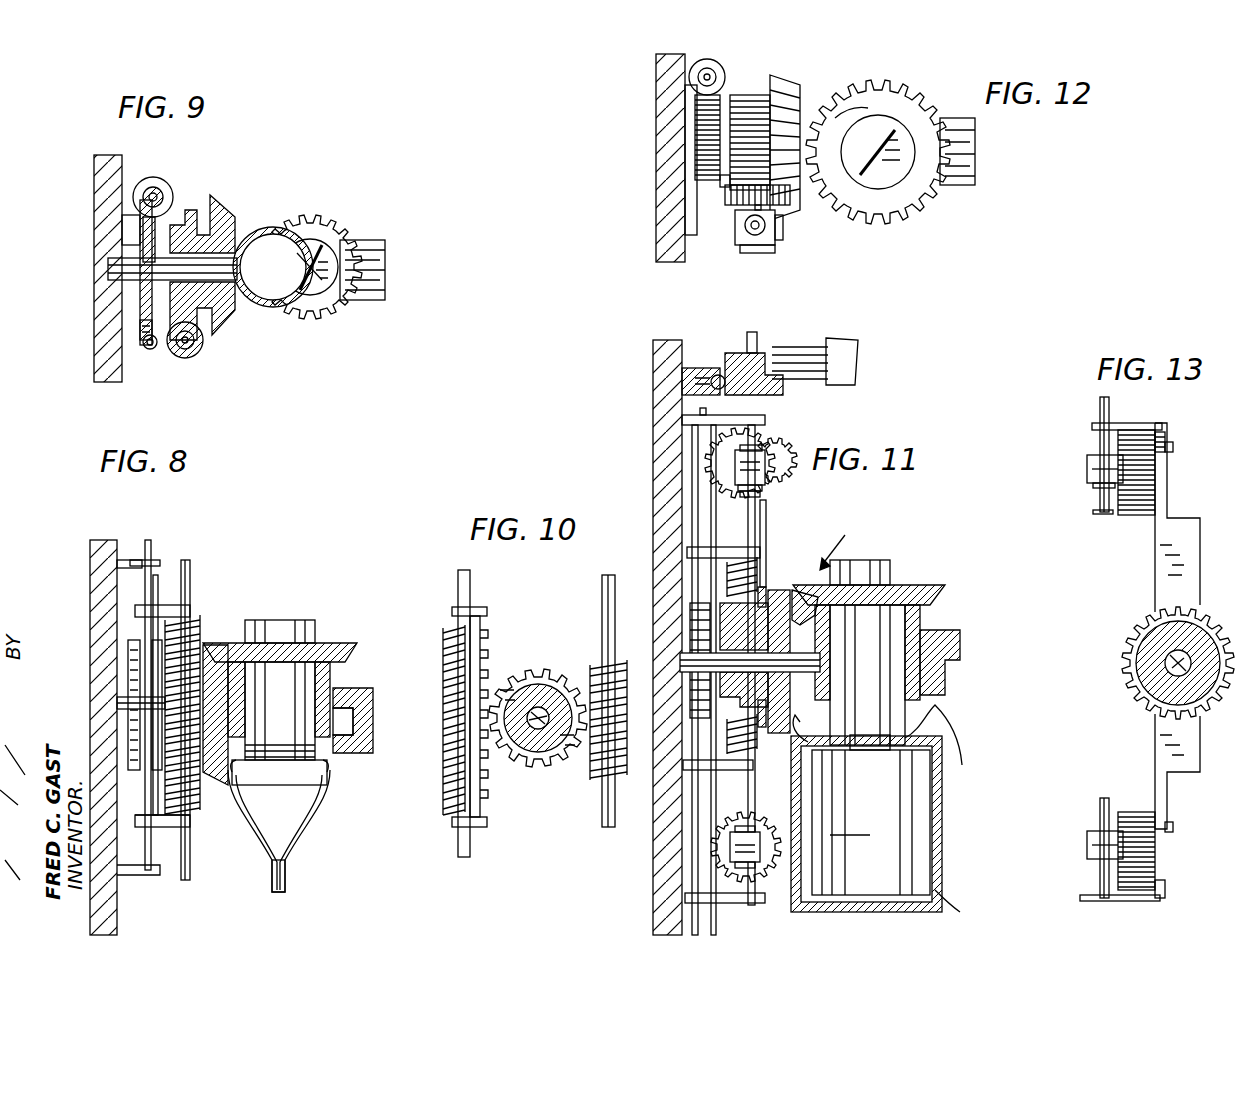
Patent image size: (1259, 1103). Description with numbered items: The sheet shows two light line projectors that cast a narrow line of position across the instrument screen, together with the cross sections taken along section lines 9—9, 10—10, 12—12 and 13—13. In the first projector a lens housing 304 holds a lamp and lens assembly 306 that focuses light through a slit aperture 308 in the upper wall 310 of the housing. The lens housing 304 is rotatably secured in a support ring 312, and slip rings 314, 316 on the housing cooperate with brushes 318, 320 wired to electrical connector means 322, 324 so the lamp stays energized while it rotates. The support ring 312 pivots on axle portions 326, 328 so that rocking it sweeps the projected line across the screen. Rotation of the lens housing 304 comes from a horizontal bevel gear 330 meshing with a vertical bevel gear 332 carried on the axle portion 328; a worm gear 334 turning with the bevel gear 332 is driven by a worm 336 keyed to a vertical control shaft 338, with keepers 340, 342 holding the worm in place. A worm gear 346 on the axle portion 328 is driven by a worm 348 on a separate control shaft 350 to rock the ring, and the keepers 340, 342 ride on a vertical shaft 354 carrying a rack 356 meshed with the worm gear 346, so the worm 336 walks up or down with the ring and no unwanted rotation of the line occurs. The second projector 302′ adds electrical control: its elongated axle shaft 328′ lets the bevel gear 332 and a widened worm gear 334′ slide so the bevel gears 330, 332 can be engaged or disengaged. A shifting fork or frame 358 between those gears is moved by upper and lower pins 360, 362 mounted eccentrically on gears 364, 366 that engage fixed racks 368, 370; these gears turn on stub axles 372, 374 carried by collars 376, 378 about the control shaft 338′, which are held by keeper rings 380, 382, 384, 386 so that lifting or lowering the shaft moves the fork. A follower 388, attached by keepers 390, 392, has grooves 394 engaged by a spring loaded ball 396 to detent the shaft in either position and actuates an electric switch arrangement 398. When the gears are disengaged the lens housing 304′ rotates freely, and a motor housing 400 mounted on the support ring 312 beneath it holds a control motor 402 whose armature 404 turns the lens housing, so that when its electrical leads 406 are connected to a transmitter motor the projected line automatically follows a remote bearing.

In FIG. 8, the section line 9— 9 is at (80, 668).
In FIG. 8, the section line 10— 10 is at (170, 500).
In FIG. 11, the section line 12— 12 is at (648, 406).
In FIG. 11, the section line 13— 13 is at (773, 400).
In FIG. 11, the line of position indicating projector 302′ is at (856, 539).
In FIG. 8, the lens housing 304 is at (293, 720).
In FIG. 11, the lens housing 304′ is at (880, 625).
In FIG. 9, the lamp and lens assembly 306 is at (268, 300).
In FIG. 9, the slit aperture 308 is at (290, 250).
In FIG. 12, the slit aperture 308 is at (895, 130).
In FIG. 9, the upper wall 310 is at (300, 230).
In FIG. 12, the upper wall 310 is at (890, 185).
In FIG. 8, the support ring 312 is at (332, 668).
In FIG. 8, the slip ring 314 is at (330, 785).
In FIG. 8, the slip ring 316 is at (373, 720).
In FIG. 8, the brush 318 is at (318, 758).
In FIG. 8, the brush 320 is at (248, 772).
In FIG. 8, the electrical connector means 322 is at (308, 810).
In FIG. 11, the electrical connector means 322 is at (940, 722).
In FIG. 8, the electrical connector means 324 is at (272, 870).
In FIG. 11, the electrical connector means 324 is at (810, 755).
In FIG. 8, the axle portion 326 is at (373, 700).
In FIG. 9, the axle portion 328 is at (118, 268).
In FIG. 8, the axle portion 328 is at (120, 705).
In FIG. 10, the axle portion 328 is at (537, 707).
In FIG. 11, the axle shaft 328′ is at (812, 660).
In FIG. 12, the axle shaft 328′ is at (810, 212).
In FIG. 9, the horizontal bevel gear 330 is at (318, 330).
In FIG. 8, the horizontal bevel gear 330 is at (350, 645).
In FIG. 11, the horizontal bevel gear 330 is at (915, 585).
In FIG. 12, the horizontal bevel gear 330 is at (928, 208).
In FIG. 9, the vertical bevel gear 332 is at (230, 212).
In FIG. 8, the vertical bevel gear 332 is at (215, 778).
In FIG. 11, the vertical bevel gear 332 is at (798, 596).
In FIG. 12, the vertical bevel gear 332 is at (840, 112).
In FIG. 9, the worm gear 334 is at (205, 205).
In FIG. 10, the worm gear 334 is at (555, 680).
In FIG. 11, the worm gear 334′ is at (710, 600).
In FIG. 12, the worm gear 334′ is at (753, 128).
In FIG. 13, the worm gear 334′ is at (1215, 700).
In FIG. 9, the worm 336 is at (184, 358).
In FIG. 8, the worm 336 is at (196, 620).
In FIG. 10, the worm 336 is at (445, 635).
In FIG. 11, the worm 336 is at (740, 562).
In FIG. 9, the control shaft 338 is at (198, 350).
In FIG. 8, the control shaft 338 is at (192, 578).
In FIG. 11, the control shaft 338′ is at (757, 500).
In FIG. 12, the control shaft 338′ is at (770, 245).
In FIG. 13, the control shaft 338′ is at (1100, 410).
In FIG. 8, the keeper 340 is at (155, 600).
In FIG. 8, the keeper 342 is at (175, 827).
In FIG. 9, the worm gear 346 is at (140, 232).
In FIG. 8, the worm gear 346 is at (152, 740).
In FIG. 10, the worm gear 346 is at (545, 753).
In FIG. 12, the worm gear 346 is at (690, 125).
In FIG. 9, the worm 348 is at (160, 190).
In FIG. 8, the worm 348 is at (128, 685).
In FIG. 10, the worm 348 is at (600, 800).
In FIG. 12, the worm 348 is at (695, 77).
In FIG. 9, the control shaft 350 is at (158, 180).
In FIG. 8, the control shaft 350 is at (148, 545).
In FIG. 10, the control shaft 350 is at (602, 600).
In FIG. 12, the control shaft 350 is at (725, 68).
In FIG. 9, the vertical shaft 354 is at (150, 350).
In FIG. 8, the vertical shaft 354 is at (130, 565).
In FIG. 9, the rack 356 is at (140, 330).
In FIG. 10, the rack 356 is at (490, 640).
In FIG. 11, the shifting fork or frame 358 is at (768, 540).
In FIG. 12, the shifting fork or frame 358 is at (785, 78).
In FIG. 13, the shifting fork or frame 358 is at (1185, 545).
In FIG. 11, the upper pin 360 is at (796, 438).
In FIG. 12, the upper pin 360 is at (745, 245).
In FIG. 13, the upper pin 360 is at (1173, 448).
In FIG. 11, the lower pin 362 is at (745, 820).
In FIG. 13, the lower pin 362 is at (1172, 832).
In FIG. 11, the gear wheel 364 is at (766, 470).
In FIG. 13, the gear wheel 364 is at (1140, 430).
In FIG. 11, the gear wheel 366 is at (740, 880).
In FIG. 13, the gear wheel 366 is at (1135, 812).
In FIG. 11, the fixed rack 368 is at (745, 487).
In FIG. 12, the fixed rack 368 is at (740, 205).
In FIG. 13, the fixed rack 368 is at (1165, 440).
In FIG. 11, the fixed rack 370 is at (735, 860).
In FIG. 13, the fixed rack 370 is at (1166, 872).
In FIG. 13, the stub axle 372 is at (1092, 469).
In FIG. 13, the stub axle 374 is at (1090, 840).
In FIG. 11, the collar 376 is at (740, 448).
In FIG. 12, the collar 376 is at (783, 230).
In FIG. 13, the collar 376 is at (1093, 487).
In FIG. 11, the collar 378 is at (755, 868).
In FIG. 13, the collar 378 is at (1092, 846).
In FIG. 11, the keeper ring 380 is at (762, 490).
In FIG. 12, the keeper ring 380 is at (758, 253).
In FIG. 13, the keeper ring 380 is at (1095, 430).
In FIG. 11, the keeper ring 382 is at (725, 482).
In FIG. 13, the keeper ring 382 is at (1100, 514).
In FIG. 13, the keeper ring 384 is at (1100, 830).
In FIG. 13, the keeper ring 386 is at (1090, 895).
In FIG. 11, the follower 388 is at (757, 350).
In FIG. 11, the keeper 390 is at (740, 355).
In FIG. 11, the keeper 392 is at (723, 409).
In FIG. 11, the grooves 394 is at (715, 378).
In FIG. 11, the spring loaded ball 396 is at (705, 370).
In FIG. 11, the electric switch arrangement 398 is at (865, 338).
In FIG. 11, the motor housing 400 is at (942, 818).
In FIG. 11, the control motor 402 is at (850, 831).
In FIG. 11, the armature shaft 404 is at (878, 735).
In FIG. 11, the electrical leads 406 is at (945, 880).